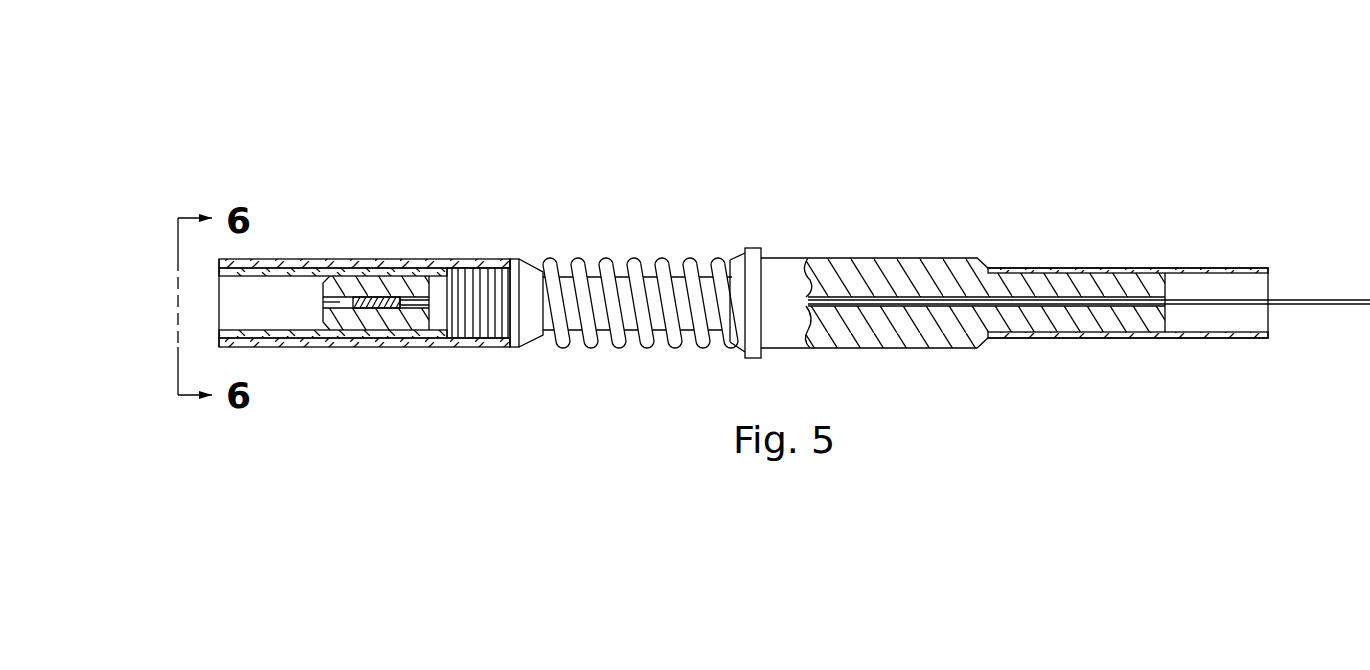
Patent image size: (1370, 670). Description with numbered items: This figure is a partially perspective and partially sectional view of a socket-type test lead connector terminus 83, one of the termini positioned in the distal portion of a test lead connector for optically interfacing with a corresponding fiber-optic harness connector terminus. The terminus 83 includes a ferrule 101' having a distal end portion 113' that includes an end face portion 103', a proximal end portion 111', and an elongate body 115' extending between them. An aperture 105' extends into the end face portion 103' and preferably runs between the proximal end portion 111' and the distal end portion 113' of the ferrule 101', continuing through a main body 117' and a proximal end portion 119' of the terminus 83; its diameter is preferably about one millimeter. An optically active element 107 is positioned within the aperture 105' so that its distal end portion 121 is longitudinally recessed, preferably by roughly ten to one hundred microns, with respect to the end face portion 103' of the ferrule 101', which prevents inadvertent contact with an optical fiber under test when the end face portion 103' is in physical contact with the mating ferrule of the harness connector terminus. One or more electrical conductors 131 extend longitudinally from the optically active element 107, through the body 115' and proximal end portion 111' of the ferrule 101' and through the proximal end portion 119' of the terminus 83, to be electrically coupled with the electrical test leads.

The socket-type test lead connector terminus 83 is at (987, 80).
The distal end portion 113' is at (301, 270).
The ferrule 101' is at (364, 339).
The end face portion 103' is at (246, 311).
The aperture 105' is at (206, 277).
The optically active element 107 is at (388, 299).
The distal end portion of the optically active element 121 is at (353, 297).
The elongate body 115' is at (473, 245).
The proximal end portion 111' is at (628, 243).
The main body 117' is at (817, 249).
The proximal end portion of the terminus 119' is at (1014, 243).
The electrical conductors 131 is at (1330, 300).